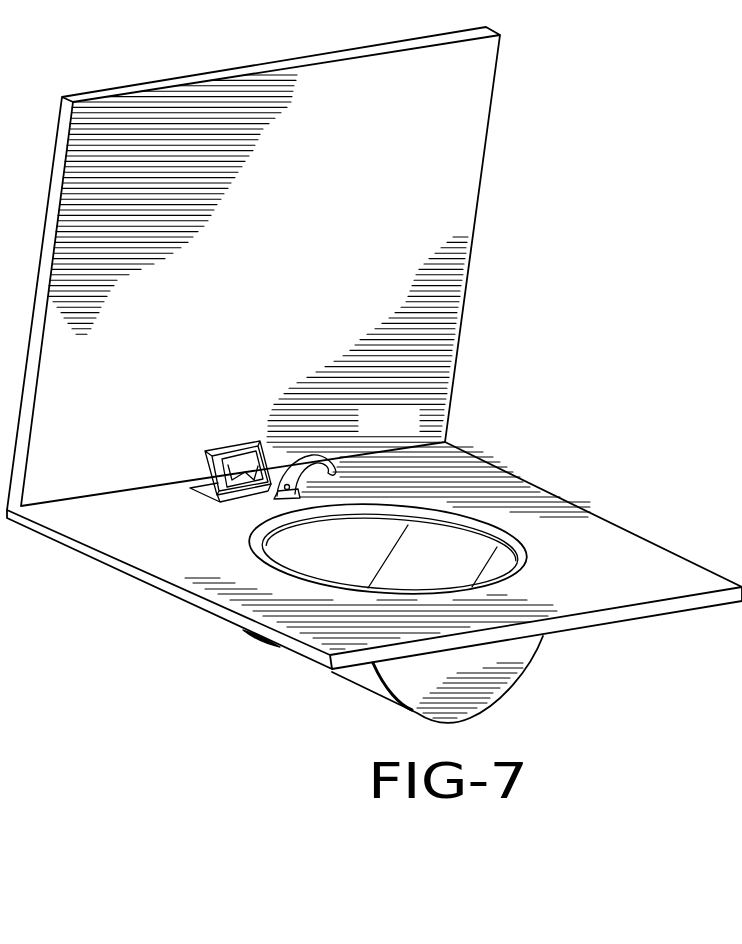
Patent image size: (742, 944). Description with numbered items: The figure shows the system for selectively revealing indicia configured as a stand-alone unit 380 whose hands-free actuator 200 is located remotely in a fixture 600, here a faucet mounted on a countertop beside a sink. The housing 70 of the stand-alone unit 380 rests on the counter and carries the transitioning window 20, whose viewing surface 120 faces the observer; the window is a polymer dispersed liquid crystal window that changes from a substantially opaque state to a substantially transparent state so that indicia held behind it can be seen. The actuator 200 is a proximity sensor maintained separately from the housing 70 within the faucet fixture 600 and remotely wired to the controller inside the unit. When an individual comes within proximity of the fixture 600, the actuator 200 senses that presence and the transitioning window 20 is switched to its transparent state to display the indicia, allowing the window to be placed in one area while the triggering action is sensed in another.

The housing 70 is at (195, 451).
The transitioning window 20 is at (235, 434).
The viewing surface 120 is at (245, 460).
The stand-alone unit 380 is at (220, 485).
The fixture 600 is at (307, 453).
The actuator 200 is at (278, 497).